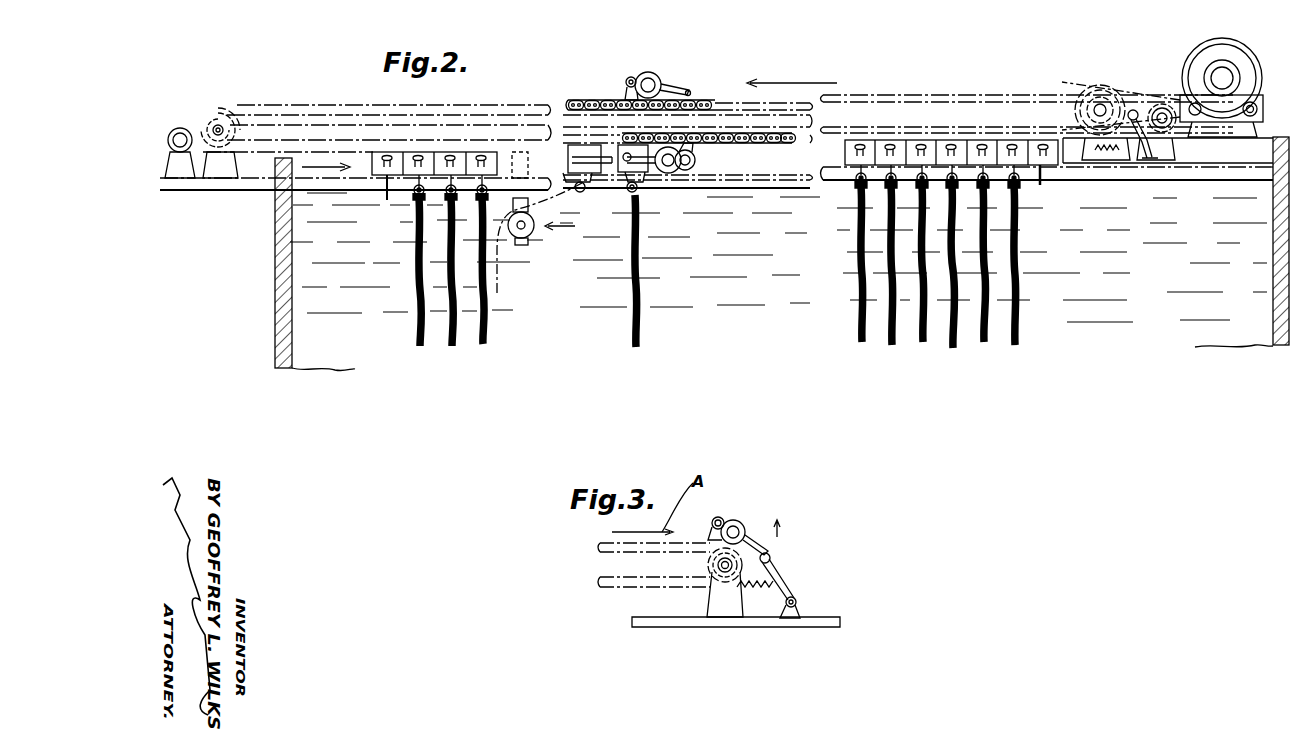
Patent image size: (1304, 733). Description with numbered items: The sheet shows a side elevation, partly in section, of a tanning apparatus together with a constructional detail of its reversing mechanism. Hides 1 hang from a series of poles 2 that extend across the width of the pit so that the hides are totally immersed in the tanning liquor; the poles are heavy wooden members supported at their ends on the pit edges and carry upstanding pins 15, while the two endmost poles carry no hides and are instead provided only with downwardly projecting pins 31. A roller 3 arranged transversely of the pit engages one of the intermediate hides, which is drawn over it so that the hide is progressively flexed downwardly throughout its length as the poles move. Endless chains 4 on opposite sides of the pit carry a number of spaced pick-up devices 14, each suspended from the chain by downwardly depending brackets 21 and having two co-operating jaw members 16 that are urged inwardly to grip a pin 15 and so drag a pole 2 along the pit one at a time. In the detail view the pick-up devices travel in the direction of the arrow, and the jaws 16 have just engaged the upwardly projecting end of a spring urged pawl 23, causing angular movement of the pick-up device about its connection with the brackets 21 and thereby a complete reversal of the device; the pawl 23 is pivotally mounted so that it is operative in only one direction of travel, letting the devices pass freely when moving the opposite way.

In FIG. 2, the hide 1 is at (420, 346).
In FIG. 2, the pole 2 is at (395, 153).
In FIG. 2, the roller 3 is at (535, 236).
In FIG. 2, the endless chain 4 is at (690, 92).
In FIG. 3, the endless chain 4 is at (612, 584).
In FIG. 2, the pick-up device 14 is at (668, 85).
In FIG. 3, the pick-up device 14 is at (764, 550).
In FIG. 2, the upstanding pin 15 is at (460, 153).
In FIG. 3, the jaw member 16 is at (772, 557).
In FIG. 3, the bracket 21 is at (710, 540).
In FIG. 2, the spring urged pawl 23 is at (1140, 110).
In FIG. 3, the spring urged pawl 23 is at (780, 583).
In FIG. 2, the downwardly projecting pin 31 is at (387, 200).